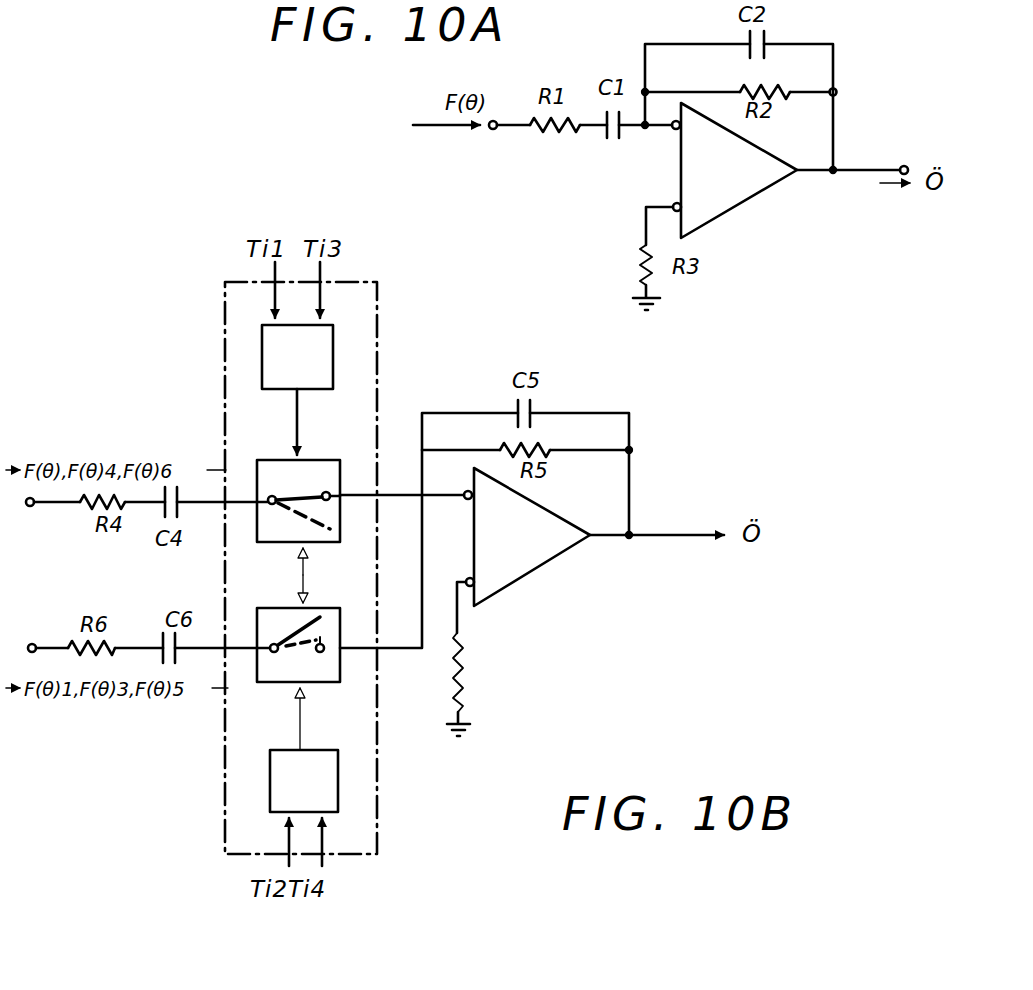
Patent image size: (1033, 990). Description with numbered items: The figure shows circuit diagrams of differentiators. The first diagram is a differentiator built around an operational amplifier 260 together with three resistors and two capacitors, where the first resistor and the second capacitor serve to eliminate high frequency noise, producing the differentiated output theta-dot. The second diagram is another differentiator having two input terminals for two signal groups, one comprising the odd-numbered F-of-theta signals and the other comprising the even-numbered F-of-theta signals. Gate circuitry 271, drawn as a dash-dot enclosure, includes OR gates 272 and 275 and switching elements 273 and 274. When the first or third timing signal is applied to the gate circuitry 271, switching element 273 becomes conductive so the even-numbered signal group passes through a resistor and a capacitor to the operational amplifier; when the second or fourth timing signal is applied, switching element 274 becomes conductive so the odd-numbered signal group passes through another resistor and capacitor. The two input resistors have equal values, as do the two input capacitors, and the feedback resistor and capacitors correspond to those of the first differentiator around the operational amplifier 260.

In FIG. 10A, the operational amplifier 260 is at (745, 190).
In FIG. 10B, the operational amplifier 260 is at (535, 565).
In FIG. 10B, the gate circuitry 271 is at (225, 298).
In FIG. 10B, the OR gate 272 is at (333, 345).
In FIG. 10B, the switching element 273 is at (257, 452).
In FIG. 10B, the switching element 274 is at (32, 508).
In FIG. 10B, the OR gate 275 is at (270, 795).